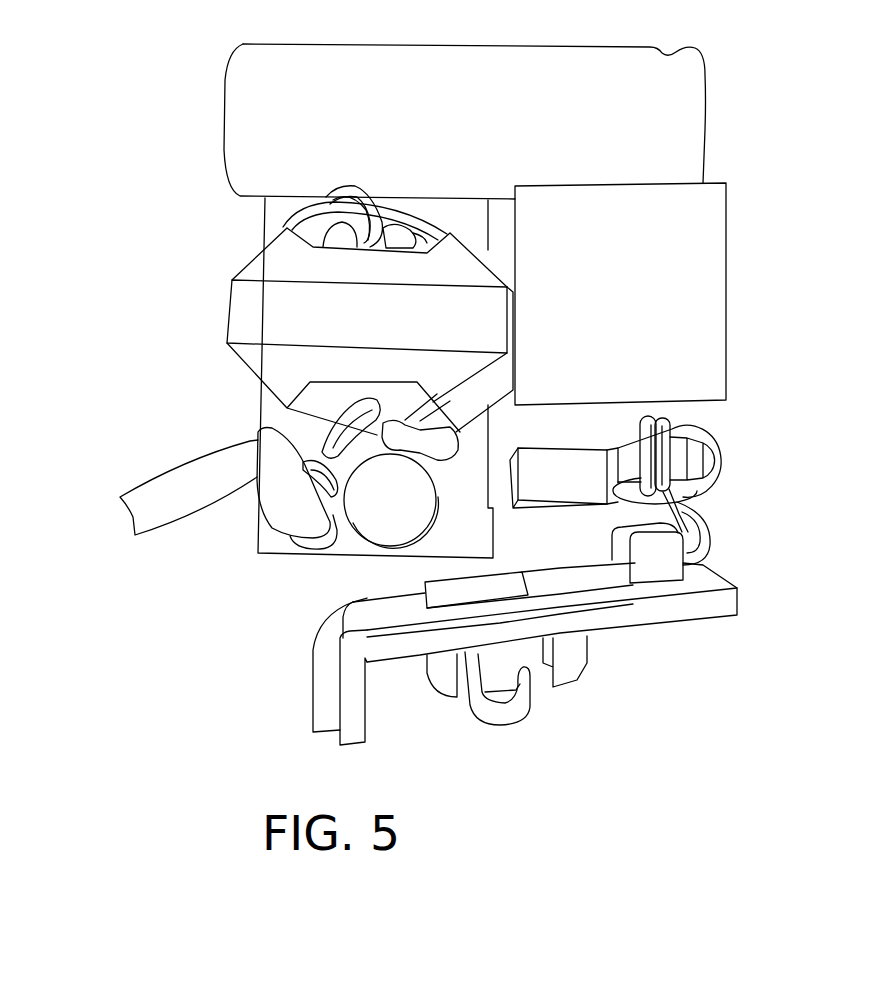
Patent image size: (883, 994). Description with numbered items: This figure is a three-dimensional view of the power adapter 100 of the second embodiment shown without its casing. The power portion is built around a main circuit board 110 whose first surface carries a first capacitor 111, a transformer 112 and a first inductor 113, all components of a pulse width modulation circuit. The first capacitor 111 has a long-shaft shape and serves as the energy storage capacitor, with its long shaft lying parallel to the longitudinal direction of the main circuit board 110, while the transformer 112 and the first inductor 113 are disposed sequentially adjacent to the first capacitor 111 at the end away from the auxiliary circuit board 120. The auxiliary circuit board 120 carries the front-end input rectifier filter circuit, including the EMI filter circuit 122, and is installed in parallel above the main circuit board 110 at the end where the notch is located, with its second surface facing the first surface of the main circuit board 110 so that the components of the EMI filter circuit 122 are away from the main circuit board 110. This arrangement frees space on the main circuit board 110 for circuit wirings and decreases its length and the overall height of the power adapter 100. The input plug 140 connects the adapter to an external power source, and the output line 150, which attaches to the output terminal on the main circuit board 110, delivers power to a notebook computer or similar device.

The power adapter 100 is at (44, 55).
The main circuit board 110 is at (273, 540).
The first capacitor 111 is at (278, 128).
The transformer 112 is at (287, 313).
The first inductor 113 is at (287, 486).
The auxiliary circuit board 120 is at (497, 493).
The EMI filter circuit 122 is at (615, 325).
The input plug 140 is at (670, 607).
The output line 150 is at (176, 504).